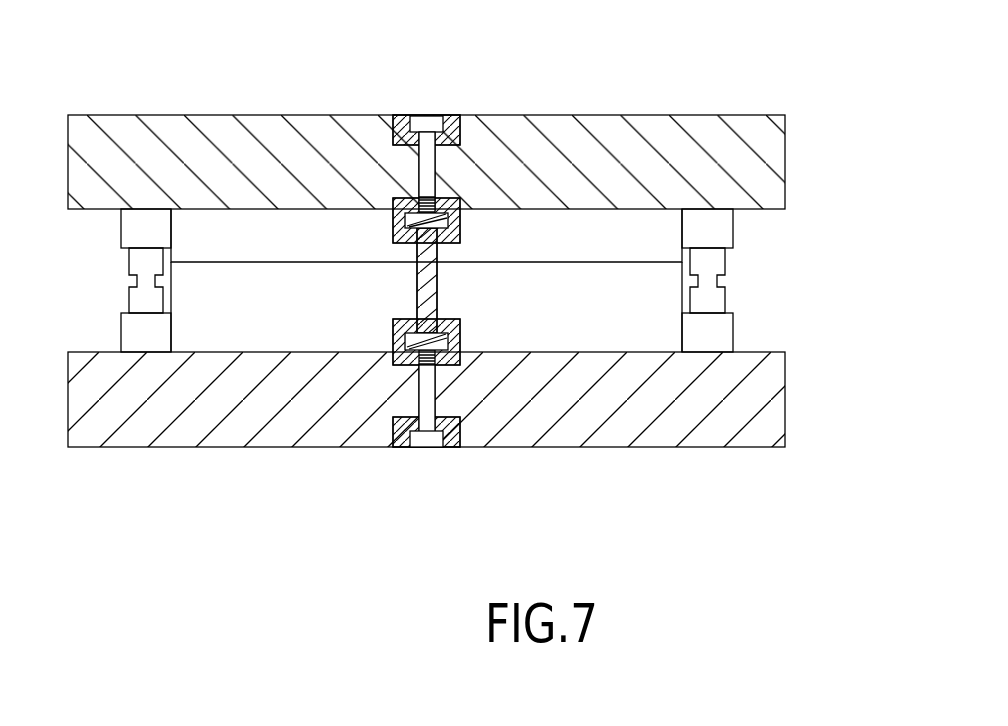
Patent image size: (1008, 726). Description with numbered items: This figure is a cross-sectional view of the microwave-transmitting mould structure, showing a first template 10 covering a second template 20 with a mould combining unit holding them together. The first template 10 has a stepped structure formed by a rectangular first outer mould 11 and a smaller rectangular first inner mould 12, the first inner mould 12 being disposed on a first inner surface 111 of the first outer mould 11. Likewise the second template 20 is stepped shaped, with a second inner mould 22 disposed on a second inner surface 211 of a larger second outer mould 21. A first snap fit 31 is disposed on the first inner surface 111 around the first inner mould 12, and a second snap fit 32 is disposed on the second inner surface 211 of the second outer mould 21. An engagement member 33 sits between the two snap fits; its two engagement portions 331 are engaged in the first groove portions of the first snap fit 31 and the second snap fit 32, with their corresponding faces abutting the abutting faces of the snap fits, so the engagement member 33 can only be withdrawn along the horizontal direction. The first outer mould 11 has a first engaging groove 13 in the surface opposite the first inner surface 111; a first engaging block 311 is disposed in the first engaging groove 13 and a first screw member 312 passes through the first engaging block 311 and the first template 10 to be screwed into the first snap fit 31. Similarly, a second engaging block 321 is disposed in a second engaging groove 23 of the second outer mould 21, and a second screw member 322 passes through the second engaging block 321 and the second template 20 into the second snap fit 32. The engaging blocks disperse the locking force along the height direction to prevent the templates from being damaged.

The first template 10 is at (454, 145).
The first outer mould 11 is at (653, 130).
The first inner surface 111 is at (753, 212).
The first inner mould 12 is at (555, 228).
The first engaging groove 13 is at (463, 130).
The second template 20 is at (454, 416).
The second outer mould 21 is at (227, 437).
The second inner surface 211 is at (762, 352).
The second inner mould 22 is at (598, 323).
The second engaging groove 23 is at (393, 437).
The first snap fit 31 is at (393, 235).
The first engaging block 311 is at (400, 117).
The first screw member 312 is at (427, 120).
The second snap fit 32 is at (447, 332).
The second engaging block 321 is at (450, 450).
The second screw member 322 is at (415, 450).
The engagement member 33 is at (417, 288).
The engagement portion 331 is at (455, 223).